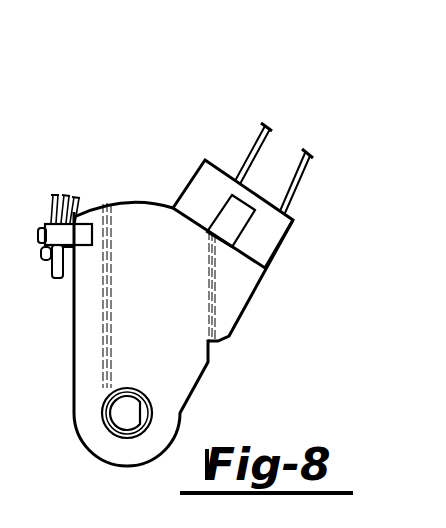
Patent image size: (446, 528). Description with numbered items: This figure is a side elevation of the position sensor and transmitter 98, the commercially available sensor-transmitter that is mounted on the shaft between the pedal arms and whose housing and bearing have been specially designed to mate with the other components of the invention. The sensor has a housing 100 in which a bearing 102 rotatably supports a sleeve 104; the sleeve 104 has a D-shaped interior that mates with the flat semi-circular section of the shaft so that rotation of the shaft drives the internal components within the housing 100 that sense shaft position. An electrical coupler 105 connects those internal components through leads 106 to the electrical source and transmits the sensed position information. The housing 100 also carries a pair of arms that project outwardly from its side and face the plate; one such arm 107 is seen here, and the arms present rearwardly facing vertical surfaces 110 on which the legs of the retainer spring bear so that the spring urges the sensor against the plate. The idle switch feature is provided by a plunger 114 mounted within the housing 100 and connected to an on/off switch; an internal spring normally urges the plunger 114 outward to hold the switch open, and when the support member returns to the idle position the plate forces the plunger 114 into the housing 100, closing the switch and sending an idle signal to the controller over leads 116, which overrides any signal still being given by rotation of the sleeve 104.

The position sensor and transmitter 98 is at (131, 202).
The housing 100 is at (236, 322).
The bearing 102 is at (150, 404).
The sleeve 104 is at (140, 415).
The electrical coupler 105 is at (282, 208).
The leads 106 is at (254, 138).
The arm 107 is at (52, 249).
The vertical surfaces 110 is at (63, 273).
The plunger 114 is at (79, 233).
The leads 116 is at (75, 212).